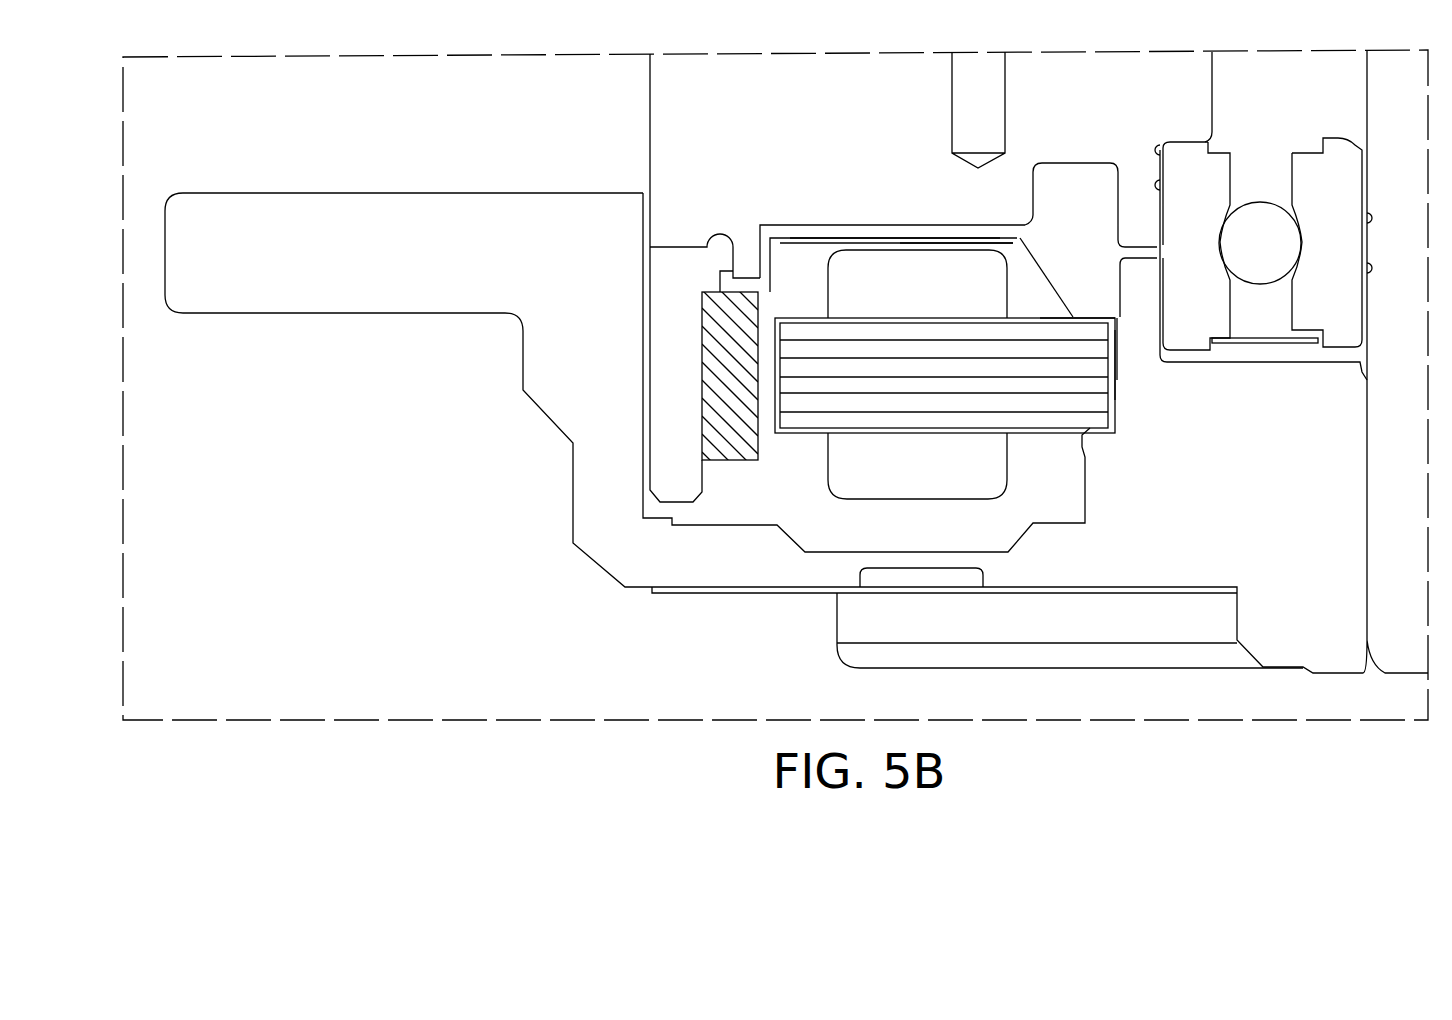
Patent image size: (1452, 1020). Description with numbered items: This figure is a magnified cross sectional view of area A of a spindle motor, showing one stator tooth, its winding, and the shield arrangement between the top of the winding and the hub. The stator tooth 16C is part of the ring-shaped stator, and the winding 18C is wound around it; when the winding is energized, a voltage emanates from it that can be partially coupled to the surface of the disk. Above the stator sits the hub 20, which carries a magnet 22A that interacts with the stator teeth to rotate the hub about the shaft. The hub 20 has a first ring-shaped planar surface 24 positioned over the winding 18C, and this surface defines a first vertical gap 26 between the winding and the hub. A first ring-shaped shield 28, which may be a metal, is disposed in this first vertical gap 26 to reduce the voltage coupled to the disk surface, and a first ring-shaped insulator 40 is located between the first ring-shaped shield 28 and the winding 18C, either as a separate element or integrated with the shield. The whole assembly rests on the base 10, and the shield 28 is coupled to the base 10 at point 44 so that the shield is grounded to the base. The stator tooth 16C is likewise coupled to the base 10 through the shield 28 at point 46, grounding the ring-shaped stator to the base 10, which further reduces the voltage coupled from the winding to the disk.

The magnified cross sectional area A is at (355, 47).
The base 10 is at (617, 525).
The stator tooth 16C is at (1077, 397).
The winding 18C is at (873, 267).
The hub 20 is at (1080, 109).
The magnet 22A is at (717, 432).
The first ring-shaped planar surface 24 is at (852, 214).
The first vertical gap 26 is at (962, 241).
The first ring-shaped shield 28 is at (921, 240).
The first ring-shaped insulator 40 is at (887, 242).
The point 44 is at (1130, 353).
The point 46 is at (1092, 306).